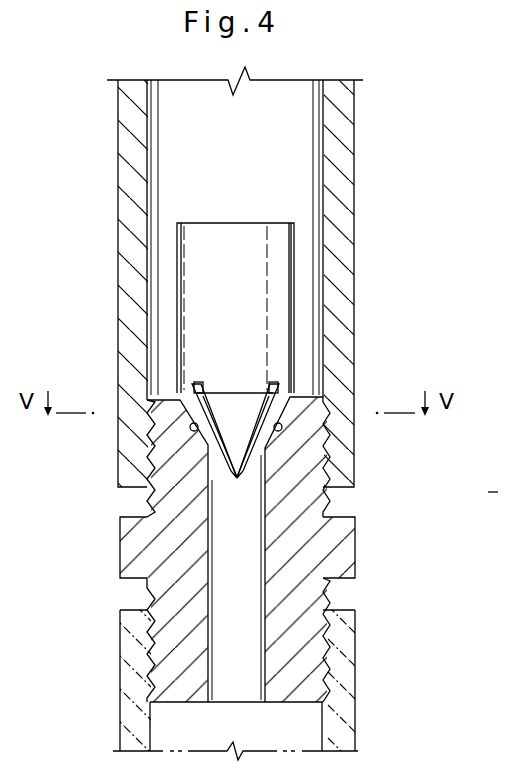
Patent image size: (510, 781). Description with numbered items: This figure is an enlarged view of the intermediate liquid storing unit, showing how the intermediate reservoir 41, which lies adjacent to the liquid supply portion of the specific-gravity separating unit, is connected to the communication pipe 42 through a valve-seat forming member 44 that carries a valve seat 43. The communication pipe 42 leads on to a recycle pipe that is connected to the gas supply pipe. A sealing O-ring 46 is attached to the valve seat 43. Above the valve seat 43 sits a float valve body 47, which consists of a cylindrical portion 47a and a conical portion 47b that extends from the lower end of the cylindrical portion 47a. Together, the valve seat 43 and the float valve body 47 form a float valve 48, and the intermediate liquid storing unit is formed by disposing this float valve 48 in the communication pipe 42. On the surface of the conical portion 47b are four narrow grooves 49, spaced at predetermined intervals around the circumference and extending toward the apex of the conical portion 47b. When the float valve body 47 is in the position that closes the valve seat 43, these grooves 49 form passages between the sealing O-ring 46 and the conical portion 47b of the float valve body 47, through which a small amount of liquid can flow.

The intermediate reservoir 41 is at (348, 681).
The communication pipe 42 is at (346, 113).
The valve seat 43 is at (191, 396).
The valve-seat forming member 44 is at (132, 548).
The sealing O-ring 46 is at (283, 427).
The float valve body 47 is at (304, 246).
The cylindrical portion 47a is at (270, 290).
The conical portion 47b is at (266, 442).
The float valve 48 is at (162, 299).
The narrow grooves 49 is at (276, 387).